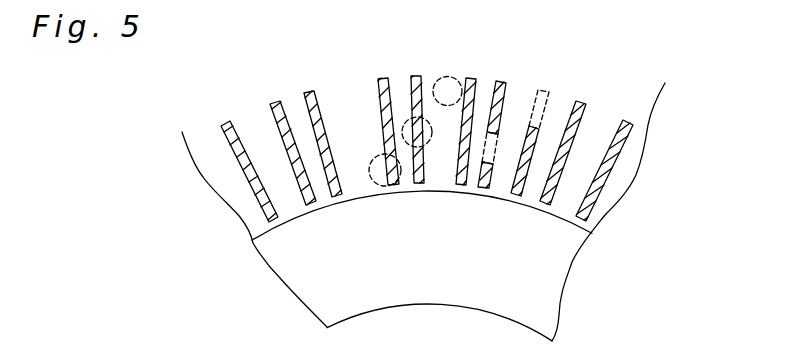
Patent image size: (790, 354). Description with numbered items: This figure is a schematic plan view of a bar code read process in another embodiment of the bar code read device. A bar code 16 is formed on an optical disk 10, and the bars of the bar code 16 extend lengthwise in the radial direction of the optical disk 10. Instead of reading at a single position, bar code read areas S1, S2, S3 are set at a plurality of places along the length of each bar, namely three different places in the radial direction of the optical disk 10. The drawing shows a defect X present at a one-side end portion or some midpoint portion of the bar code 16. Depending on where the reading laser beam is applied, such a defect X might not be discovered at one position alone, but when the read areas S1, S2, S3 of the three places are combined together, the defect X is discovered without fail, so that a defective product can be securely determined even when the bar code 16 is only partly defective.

The optical disk 10 is at (538, 262).
The bar code 16 is at (419, 75).
The bar code read area S1 is at (457, 80).
The bar code read area S2 is at (428, 118).
The bar code read area S3 is at (383, 187).
The defect X is at (493, 143).